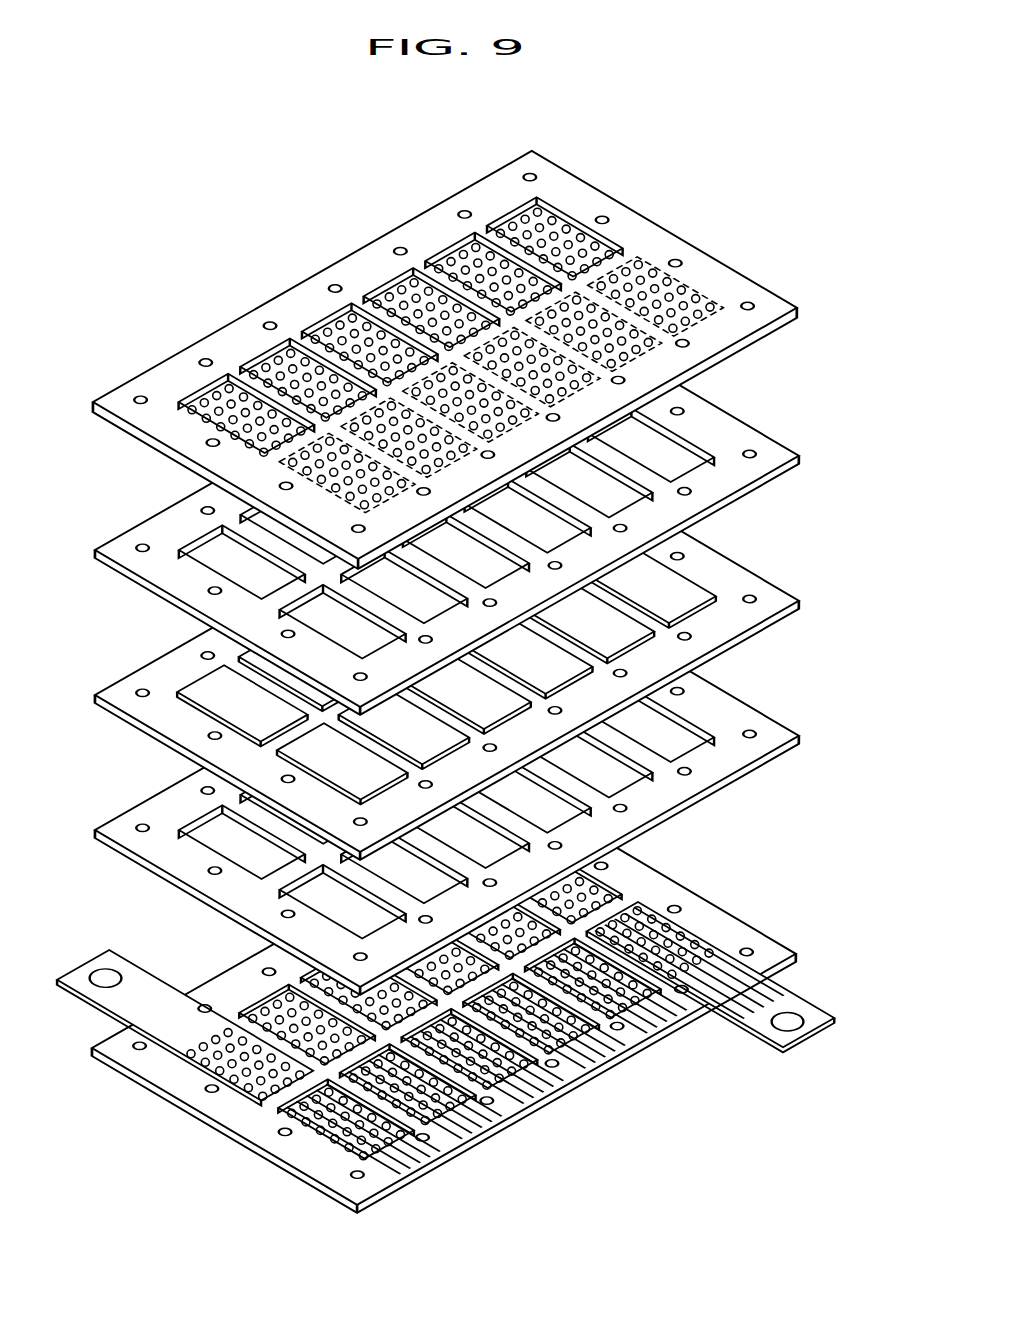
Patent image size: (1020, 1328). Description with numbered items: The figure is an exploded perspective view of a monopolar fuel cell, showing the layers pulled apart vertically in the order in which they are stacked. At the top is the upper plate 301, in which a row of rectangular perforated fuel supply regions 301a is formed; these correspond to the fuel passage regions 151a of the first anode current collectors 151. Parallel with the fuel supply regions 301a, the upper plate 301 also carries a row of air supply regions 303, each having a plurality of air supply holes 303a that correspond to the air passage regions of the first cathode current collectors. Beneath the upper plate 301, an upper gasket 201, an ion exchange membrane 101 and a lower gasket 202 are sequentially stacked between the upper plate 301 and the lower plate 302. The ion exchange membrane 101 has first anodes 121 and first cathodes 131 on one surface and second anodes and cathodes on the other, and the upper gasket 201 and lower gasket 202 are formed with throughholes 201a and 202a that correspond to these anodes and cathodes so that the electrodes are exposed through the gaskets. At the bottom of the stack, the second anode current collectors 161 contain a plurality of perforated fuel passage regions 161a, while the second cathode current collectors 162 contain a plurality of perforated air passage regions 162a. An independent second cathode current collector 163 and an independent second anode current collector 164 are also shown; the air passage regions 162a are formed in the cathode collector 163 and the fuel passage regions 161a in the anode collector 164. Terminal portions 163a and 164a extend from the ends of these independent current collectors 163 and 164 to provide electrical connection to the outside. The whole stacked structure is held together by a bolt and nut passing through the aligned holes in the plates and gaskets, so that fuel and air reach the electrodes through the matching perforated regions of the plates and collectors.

The upper plate 301 is at (444, 524).
The fuel supply region 301a is at (247, 417).
The lower plate 302 is at (445, 245).
The air supply region 303 is at (650, 267).
The air supply hole 303a is at (687, 303).
The first anode current collector 151 is at (401, 290).
The fuel passage region 151a is at (390, 290).
The upper gasket 201 is at (422, 507).
The throughhole 201a is at (212, 543).
The ion exchange membrane 101 is at (462, 652).
The first anode 121 is at (203, 680).
The first cathode 131 is at (313, 747).
The lower gasket 202 is at (452, 787).
The throughhole 202a is at (399, 788).
The second anode current collector 161 is at (449, 1005).
The fuel passage region 161a is at (432, 1135).
The second cathode current collector 162 is at (233, 1007).
The air passage region 162a is at (238, 1010).
The independent second cathode current collector 163 is at (168, 1028).
The terminal portion 163a is at (72, 973).
The independent second anode current collector 164 is at (632, 907).
The terminal portion 164a is at (808, 1018).